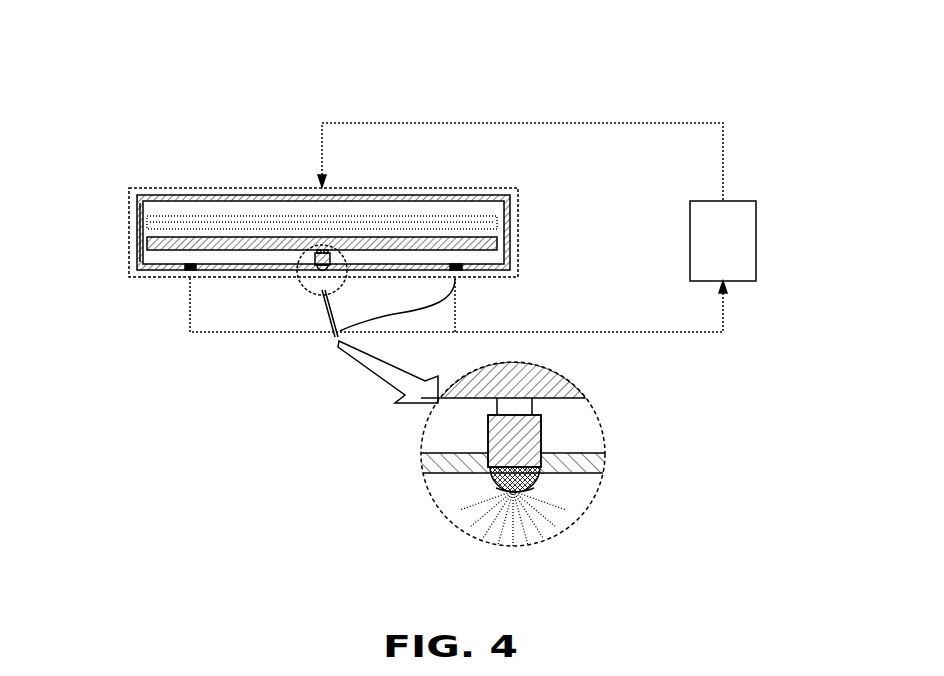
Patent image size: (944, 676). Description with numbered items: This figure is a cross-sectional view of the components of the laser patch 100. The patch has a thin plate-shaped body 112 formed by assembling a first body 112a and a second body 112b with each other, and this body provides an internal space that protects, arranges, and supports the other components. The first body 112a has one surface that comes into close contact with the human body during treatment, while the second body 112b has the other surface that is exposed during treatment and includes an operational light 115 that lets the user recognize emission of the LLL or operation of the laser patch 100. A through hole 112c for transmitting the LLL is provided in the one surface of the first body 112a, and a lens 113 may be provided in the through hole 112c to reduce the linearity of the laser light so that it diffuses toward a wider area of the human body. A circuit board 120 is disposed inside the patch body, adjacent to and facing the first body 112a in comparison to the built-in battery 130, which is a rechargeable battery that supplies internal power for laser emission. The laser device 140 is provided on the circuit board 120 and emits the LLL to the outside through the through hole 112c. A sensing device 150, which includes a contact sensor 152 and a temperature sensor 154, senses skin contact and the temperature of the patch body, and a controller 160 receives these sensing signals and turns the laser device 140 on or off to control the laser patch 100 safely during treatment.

The laser patch 100 is at (97, 61).
The body 112 is at (619, 203).
The first body 112a is at (510, 256).
The second body 112b is at (512, 205).
The through hole 112c is at (542, 482).
The lens 113 is at (510, 495).
The operational light 115 is at (457, 190).
The circuit board 120 is at (137, 249).
The built-in battery 130 is at (140, 228).
The laser device 140 is at (320, 251).
The sensing device 150 is at (345, 403).
The contact sensor 152 is at (190, 279).
The temperature sensor 154 is at (337, 338).
The controller 160 is at (758, 243).
The low-level laser LLL is at (550, 505).